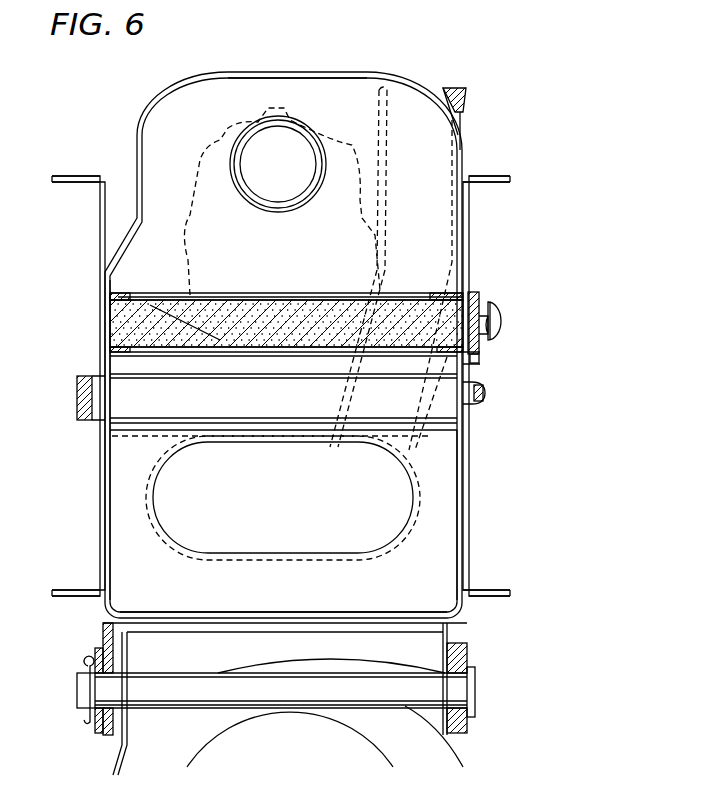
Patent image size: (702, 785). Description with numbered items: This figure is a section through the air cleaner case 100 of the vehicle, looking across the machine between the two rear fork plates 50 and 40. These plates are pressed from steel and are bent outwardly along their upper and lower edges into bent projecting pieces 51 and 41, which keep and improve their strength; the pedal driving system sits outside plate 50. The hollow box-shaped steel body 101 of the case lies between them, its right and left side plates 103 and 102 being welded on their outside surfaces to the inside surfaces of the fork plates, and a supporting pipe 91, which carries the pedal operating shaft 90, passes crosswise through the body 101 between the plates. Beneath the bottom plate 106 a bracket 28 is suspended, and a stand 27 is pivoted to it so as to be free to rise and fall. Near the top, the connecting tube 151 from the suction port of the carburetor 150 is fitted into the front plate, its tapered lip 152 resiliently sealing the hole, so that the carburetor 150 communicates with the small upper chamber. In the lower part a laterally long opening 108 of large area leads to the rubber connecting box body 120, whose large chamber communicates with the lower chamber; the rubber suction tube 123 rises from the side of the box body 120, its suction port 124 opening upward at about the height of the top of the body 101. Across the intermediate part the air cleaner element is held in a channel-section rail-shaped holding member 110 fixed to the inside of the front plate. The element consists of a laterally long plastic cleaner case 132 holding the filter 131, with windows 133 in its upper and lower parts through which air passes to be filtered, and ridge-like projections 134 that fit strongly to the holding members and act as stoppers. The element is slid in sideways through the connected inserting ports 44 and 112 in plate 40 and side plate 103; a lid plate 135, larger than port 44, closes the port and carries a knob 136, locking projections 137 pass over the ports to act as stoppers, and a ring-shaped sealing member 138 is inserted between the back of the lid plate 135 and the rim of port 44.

The stand 27 is at (362, 725).
The bracket 28 is at (458, 623).
The rear fork plate 40 is at (468, 470).
The bent projecting piece 41 is at (492, 177).
The inserting port 44 is at (480, 304).
The rear fork plate 50 is at (99, 229).
The bent projecting piece 51 is at (78, 177).
The pedal operating shaft 90 is at (77, 402).
The supporting pipe 91 is at (127, 378).
The air cleaner case 100 is at (163, 101).
The body 101 is at (231, 73).
The left side plate 102 is at (108, 468).
The right side plate 103 is at (190, 327).
The bottom plate 106 is at (272, 610).
The opening 108 is at (168, 517).
The holding member 110 is at (152, 293).
The inserting port 112 is at (481, 352).
The connecting box body 120 is at (415, 472).
The suction tube 123 is at (463, 124).
The suction port 124 is at (441, 92).
The filter 131 is at (320, 302).
The cleaner case 132 is at (246, 352).
The window 133 is at (268, 293).
The projection 134 is at (173, 350).
The lid plate 135 is at (480, 366).
The knob 136 is at (504, 320).
The locking projection 137 is at (446, 293).
The ring-shaped sealing member 138 is at (467, 292).
The carburetor 150 is at (233, 127).
The connecting tube 151 is at (297, 204).
The lip 152 is at (268, 200).